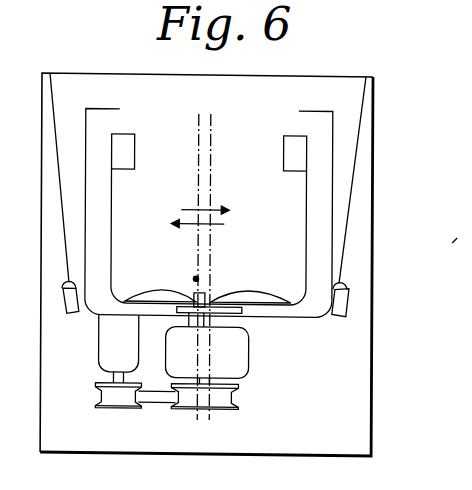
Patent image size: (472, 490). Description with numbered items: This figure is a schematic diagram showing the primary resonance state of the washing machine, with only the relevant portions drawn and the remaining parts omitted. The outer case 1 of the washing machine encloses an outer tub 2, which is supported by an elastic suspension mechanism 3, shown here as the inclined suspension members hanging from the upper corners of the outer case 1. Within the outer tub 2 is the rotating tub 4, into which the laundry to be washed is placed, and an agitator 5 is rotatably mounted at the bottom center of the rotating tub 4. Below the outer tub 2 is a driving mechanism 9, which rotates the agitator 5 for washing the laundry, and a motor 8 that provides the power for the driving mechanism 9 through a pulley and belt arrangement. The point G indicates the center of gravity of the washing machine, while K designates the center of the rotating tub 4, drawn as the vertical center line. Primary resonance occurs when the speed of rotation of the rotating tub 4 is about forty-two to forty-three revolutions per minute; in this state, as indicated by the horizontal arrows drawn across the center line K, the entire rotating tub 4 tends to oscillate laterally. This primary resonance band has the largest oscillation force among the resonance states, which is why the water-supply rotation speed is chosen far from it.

The outer case 1 is at (373, 158).
The outer tub 2 is at (313, 314).
The elastic suspension mechanism 3 is at (347, 257).
The rotating tub 4 is at (308, 197).
The agitator 5 is at (263, 287).
The motor 8 is at (100, 357).
The driving mechanism 9 is at (241, 382).
The center of gravity G is at (195, 277).
The center of rotating tub K is at (213, 168).